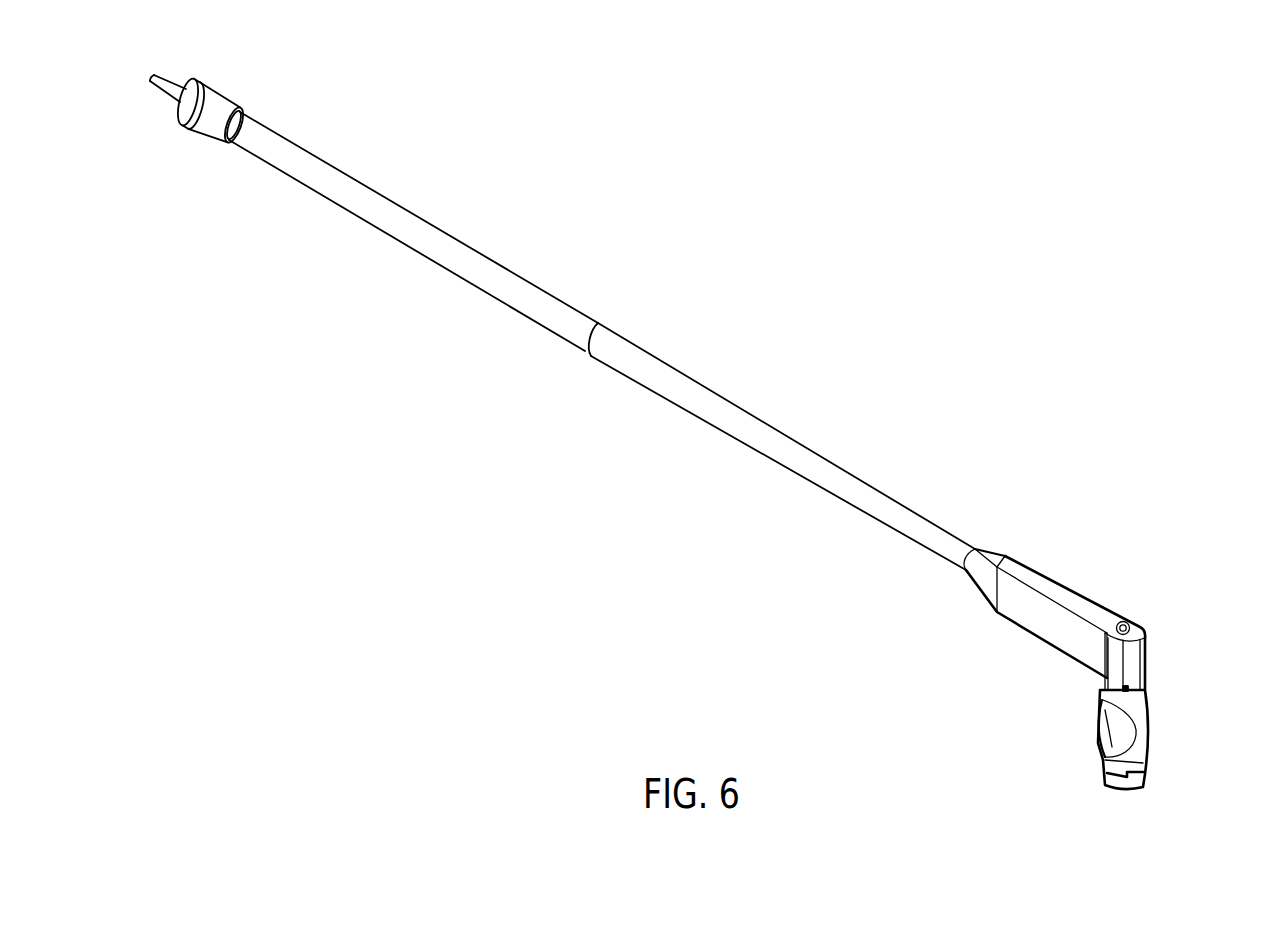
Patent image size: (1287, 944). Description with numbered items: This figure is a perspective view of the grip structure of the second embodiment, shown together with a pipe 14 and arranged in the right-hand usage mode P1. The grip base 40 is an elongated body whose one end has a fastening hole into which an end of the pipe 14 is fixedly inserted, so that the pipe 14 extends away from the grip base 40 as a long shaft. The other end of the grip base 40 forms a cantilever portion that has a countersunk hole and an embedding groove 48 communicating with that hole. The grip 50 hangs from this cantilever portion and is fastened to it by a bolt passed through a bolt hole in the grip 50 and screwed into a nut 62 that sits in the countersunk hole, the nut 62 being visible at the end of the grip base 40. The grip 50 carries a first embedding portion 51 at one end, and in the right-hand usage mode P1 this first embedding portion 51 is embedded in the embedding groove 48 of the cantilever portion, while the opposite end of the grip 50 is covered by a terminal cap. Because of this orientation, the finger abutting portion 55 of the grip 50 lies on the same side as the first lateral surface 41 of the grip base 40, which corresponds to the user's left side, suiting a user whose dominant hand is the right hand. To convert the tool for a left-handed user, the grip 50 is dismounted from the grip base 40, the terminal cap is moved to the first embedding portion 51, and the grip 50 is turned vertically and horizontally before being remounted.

The pipe 14 is at (752, 413).
The grip base 40 is at (1058, 570).
The first lateral surface 41 is at (1033, 610).
The embedding groove 48 is at (1125, 688).
The grip 50 is at (1152, 722).
The first embedding portion 51 is at (1102, 685).
The finger abutting portion 55 is at (1123, 733).
The nut 62 is at (1121, 621).
The right-hand usage mode P1 is at (1163, 695).